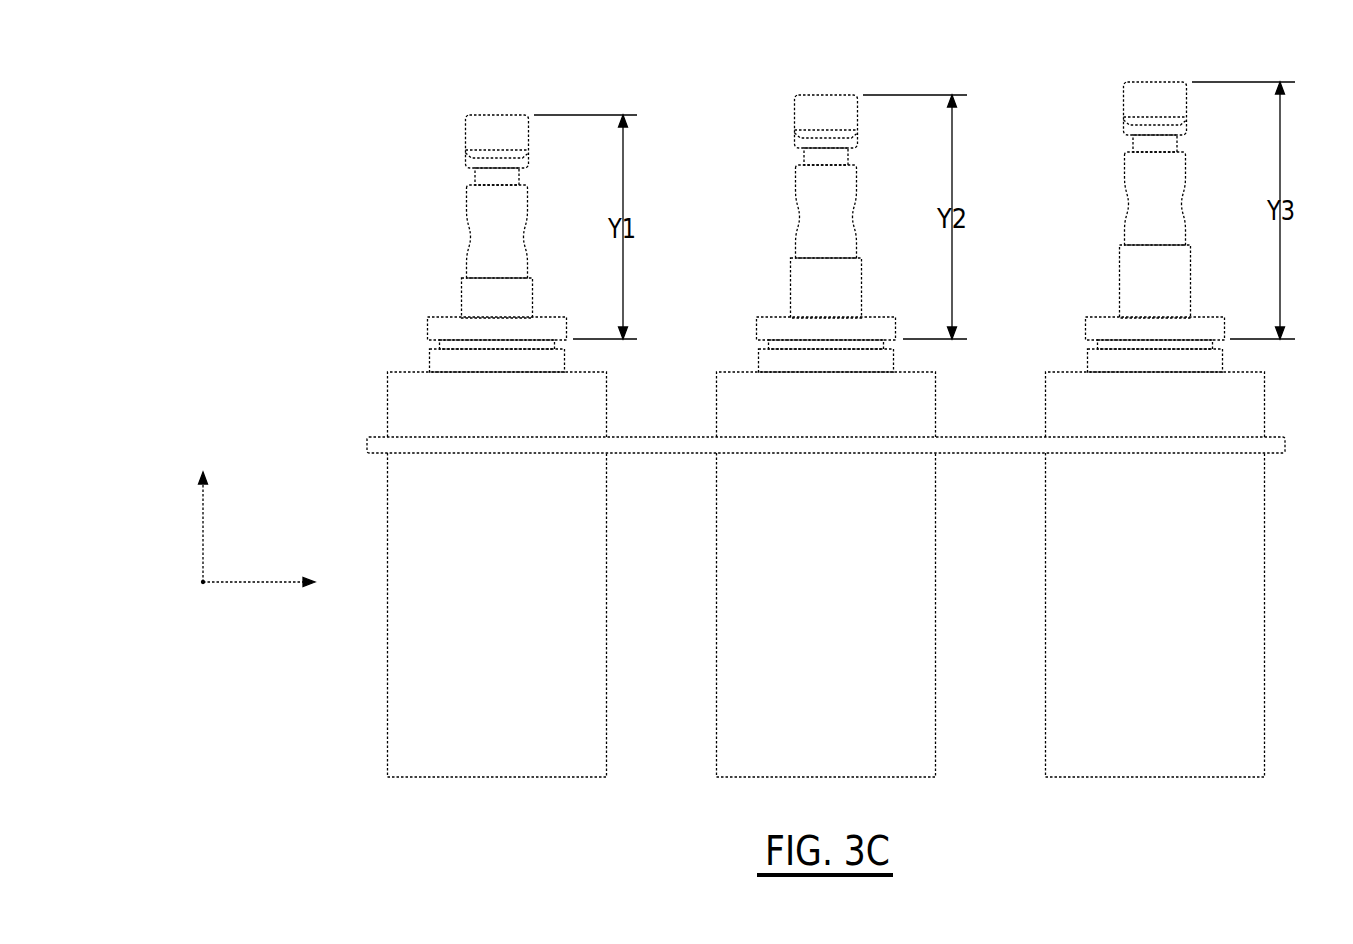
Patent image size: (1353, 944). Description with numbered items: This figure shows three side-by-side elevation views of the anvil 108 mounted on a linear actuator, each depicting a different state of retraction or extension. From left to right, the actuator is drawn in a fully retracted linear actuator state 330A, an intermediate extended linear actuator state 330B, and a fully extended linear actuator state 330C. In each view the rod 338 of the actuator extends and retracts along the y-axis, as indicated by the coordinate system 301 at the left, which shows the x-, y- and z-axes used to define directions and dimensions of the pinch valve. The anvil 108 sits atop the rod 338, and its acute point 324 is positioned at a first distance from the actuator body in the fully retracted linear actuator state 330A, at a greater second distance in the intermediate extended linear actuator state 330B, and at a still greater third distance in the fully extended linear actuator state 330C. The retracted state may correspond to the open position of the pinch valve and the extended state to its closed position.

The anvil 108 is at (441, 181).
The acute point 324 is at (483, 115).
The rod 338 is at (463, 297).
The fully retracted linear actuator state 330A is at (520, 584).
The intermediate extended linear actuator state 330B is at (848, 584).
The fully extended linear actuator state 330C is at (1178, 584).
The coordinate system 301 is at (208, 592).